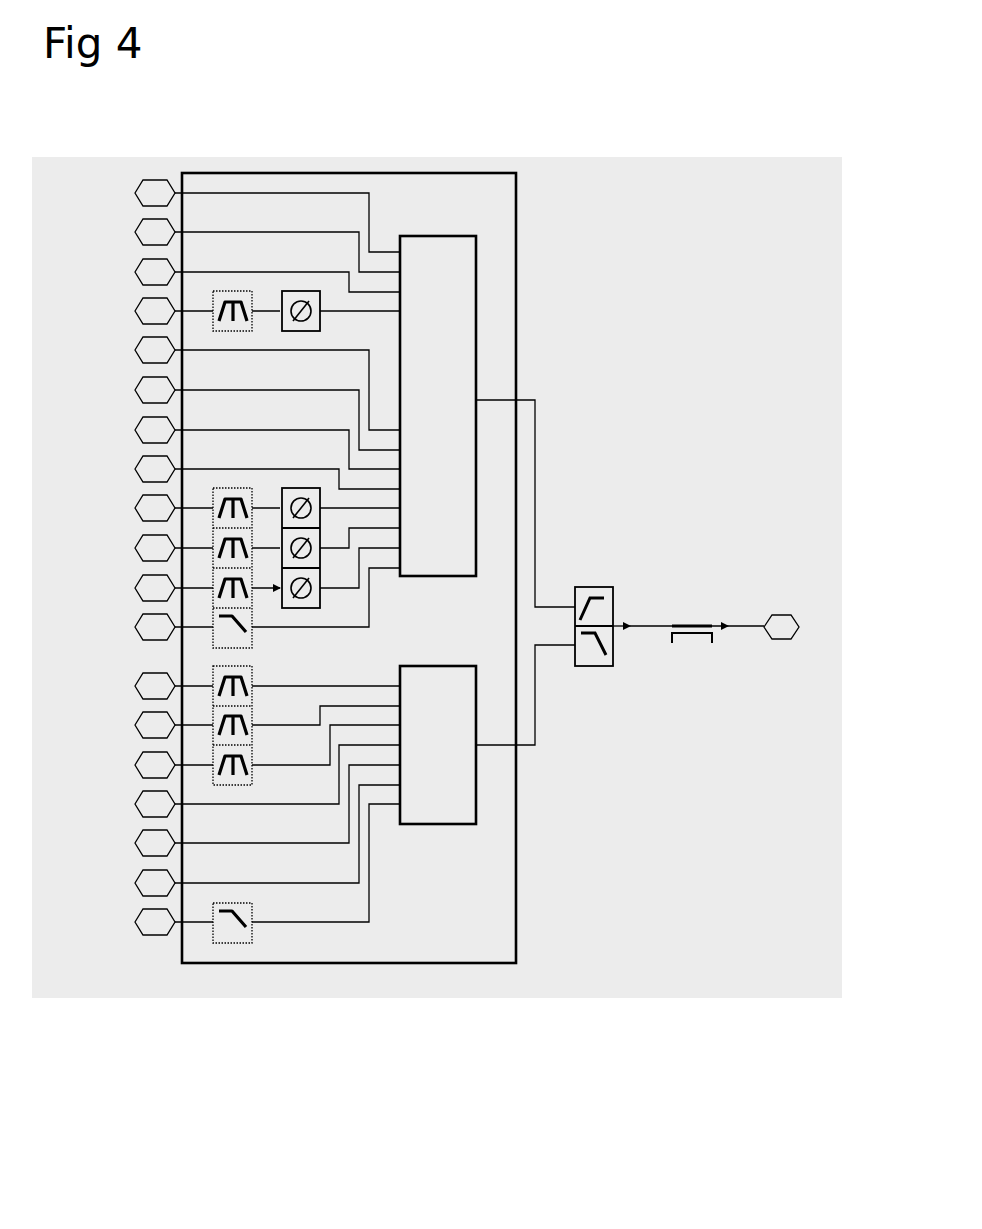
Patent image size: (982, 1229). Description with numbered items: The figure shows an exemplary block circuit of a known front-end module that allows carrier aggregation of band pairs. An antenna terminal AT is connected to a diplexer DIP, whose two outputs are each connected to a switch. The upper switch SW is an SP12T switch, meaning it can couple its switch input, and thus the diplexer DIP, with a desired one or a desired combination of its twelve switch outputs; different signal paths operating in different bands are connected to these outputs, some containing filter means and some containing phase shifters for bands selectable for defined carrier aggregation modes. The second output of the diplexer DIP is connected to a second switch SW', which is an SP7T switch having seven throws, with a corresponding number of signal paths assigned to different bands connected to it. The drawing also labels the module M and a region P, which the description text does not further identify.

The switch SW is at (515, 423).
The second switch SW' is at (518, 755).
The diplexer DIP is at (613, 666).
The antenna terminal AT is at (782, 630).
The carrier / printed circuit board P is at (134, 975).
The LB/MB/HB module M is at (457, 970).